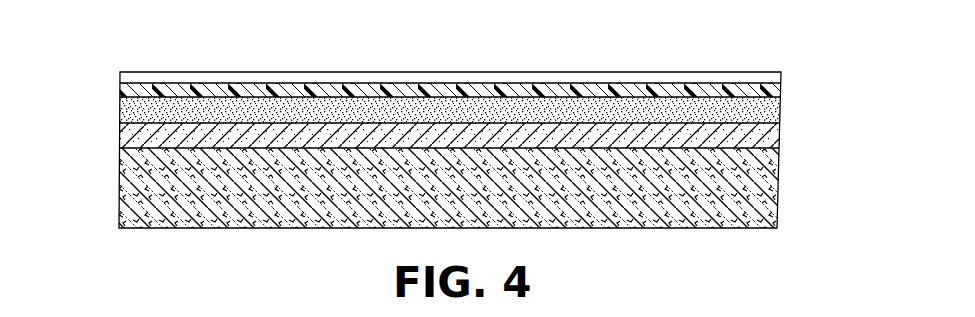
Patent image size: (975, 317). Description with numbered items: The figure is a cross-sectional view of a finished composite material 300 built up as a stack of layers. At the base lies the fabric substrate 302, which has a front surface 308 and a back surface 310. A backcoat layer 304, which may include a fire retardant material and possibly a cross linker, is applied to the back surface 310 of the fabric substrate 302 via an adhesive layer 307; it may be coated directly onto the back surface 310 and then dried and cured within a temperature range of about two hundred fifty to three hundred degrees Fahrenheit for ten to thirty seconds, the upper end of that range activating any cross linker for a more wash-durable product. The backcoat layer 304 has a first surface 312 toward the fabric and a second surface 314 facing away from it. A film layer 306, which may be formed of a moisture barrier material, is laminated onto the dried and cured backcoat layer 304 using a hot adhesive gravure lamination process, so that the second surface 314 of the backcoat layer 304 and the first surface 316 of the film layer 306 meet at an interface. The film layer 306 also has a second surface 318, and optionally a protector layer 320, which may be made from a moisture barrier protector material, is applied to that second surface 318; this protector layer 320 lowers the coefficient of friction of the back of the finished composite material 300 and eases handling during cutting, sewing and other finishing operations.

The finished composite material 300 is at (366, 44).
The fabric substrate 302 is at (750, 229).
The backcoat layer 304 is at (781, 112).
The film layer 306 is at (782, 90).
The adhesive layer 307 is at (778, 130).
The front surface 308 is at (150, 230).
The back surface 310 is at (133, 153).
The first surface 312 is at (666, 212).
The second surface 314 is at (778, 136).
The first surface 316 is at (118, 77).
The second surface 318 is at (187, 83).
The protector layer 320 is at (733, 68).